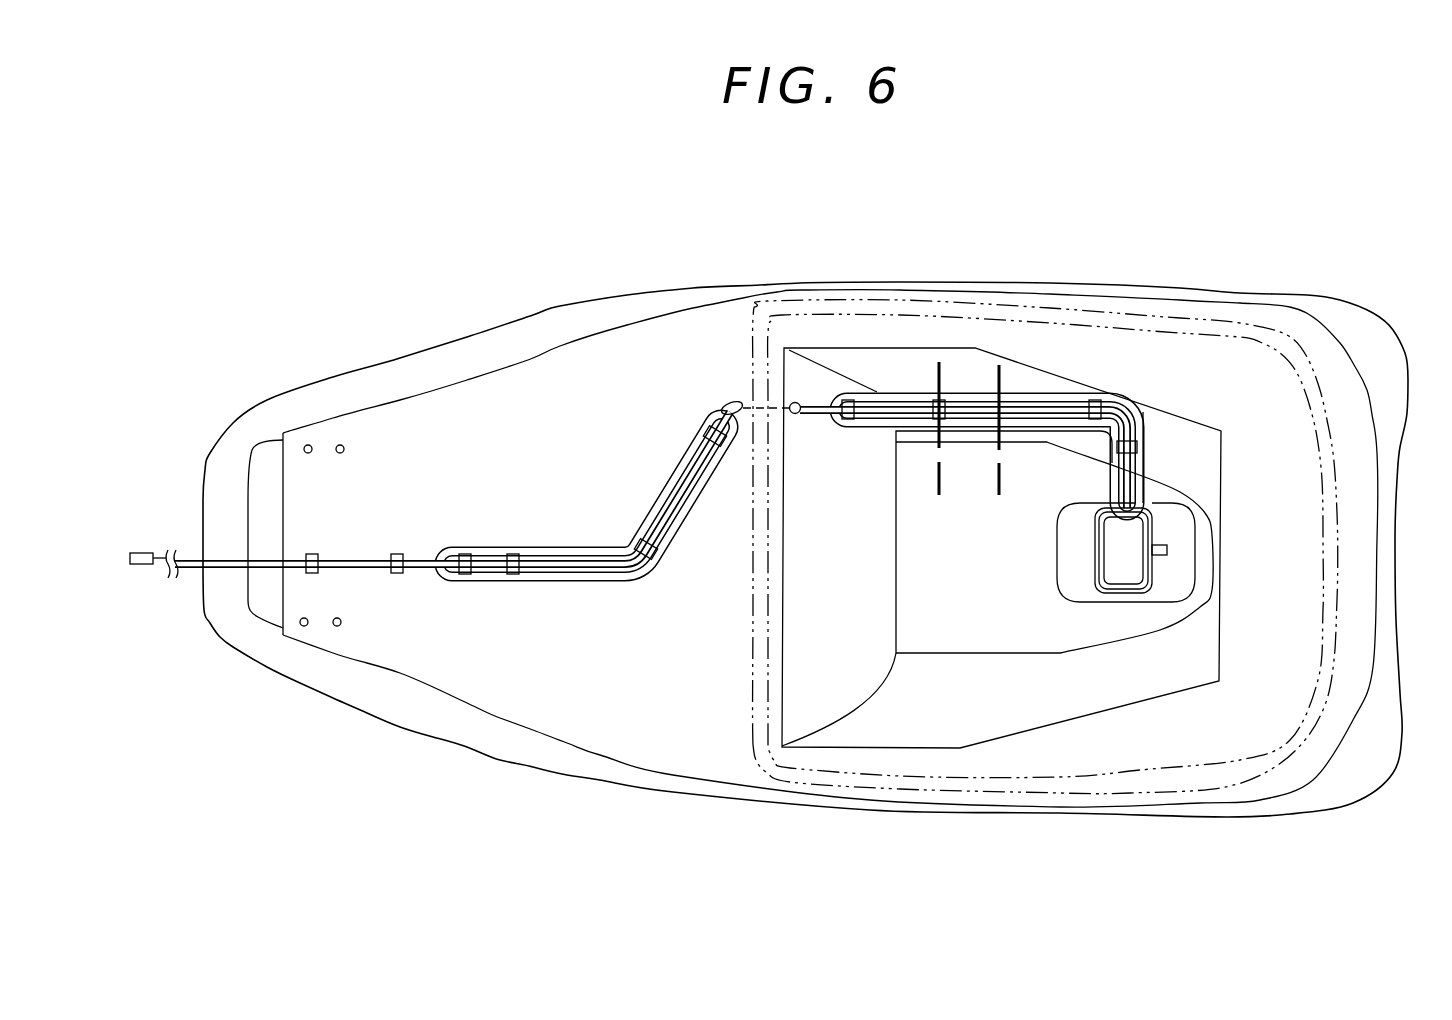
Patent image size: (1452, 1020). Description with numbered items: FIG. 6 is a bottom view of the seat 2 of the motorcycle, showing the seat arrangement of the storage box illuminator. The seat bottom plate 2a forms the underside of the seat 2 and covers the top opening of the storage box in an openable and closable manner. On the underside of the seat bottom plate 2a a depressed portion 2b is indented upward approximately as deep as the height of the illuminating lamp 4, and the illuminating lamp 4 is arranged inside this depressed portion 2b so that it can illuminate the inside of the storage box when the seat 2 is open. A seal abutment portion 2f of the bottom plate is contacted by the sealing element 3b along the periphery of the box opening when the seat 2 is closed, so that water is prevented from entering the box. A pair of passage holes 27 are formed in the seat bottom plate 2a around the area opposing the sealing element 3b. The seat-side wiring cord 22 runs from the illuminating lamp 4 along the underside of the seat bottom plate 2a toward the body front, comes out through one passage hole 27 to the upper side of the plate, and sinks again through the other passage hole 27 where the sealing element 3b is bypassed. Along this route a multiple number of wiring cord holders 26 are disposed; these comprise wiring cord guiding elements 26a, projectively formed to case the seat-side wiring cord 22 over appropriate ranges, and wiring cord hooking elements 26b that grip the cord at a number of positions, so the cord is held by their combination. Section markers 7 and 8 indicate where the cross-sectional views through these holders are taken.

The seat 2 is at (563, 305).
The seat bottom plate 2a is at (740, 352).
The depressed portion 2b is at (1165, 573).
The seal abutment portion 2f is at (1250, 363).
The sealing element 3b is at (1233, 327).
The illuminating lamp 4 is at (1132, 537).
The section line for FIG. 7 is at (993, 373).
The section line for FIG. 8 is at (932, 373).
The seat-side wiring cord 22 is at (363, 545).
The wiring cord holders 26 is at (627, 594).
The wiring cord guiding elements 26a is at (565, 547).
The wiring cord hooking elements 26b is at (465, 553).
The passage hole 27 is at (727, 400).